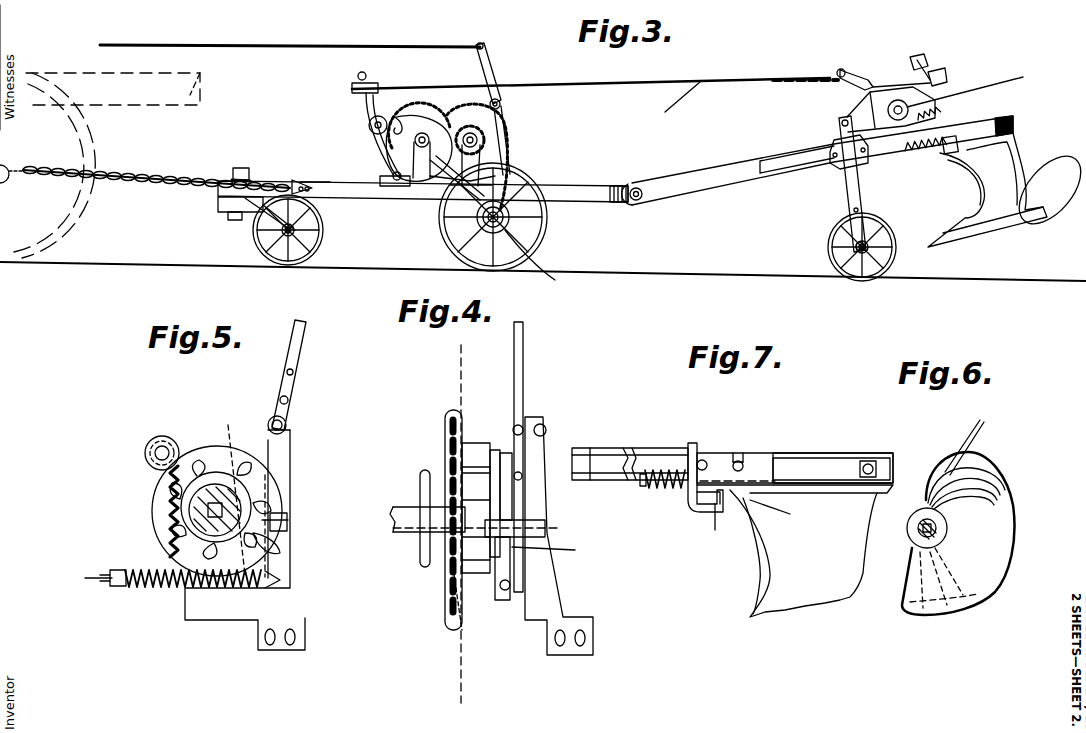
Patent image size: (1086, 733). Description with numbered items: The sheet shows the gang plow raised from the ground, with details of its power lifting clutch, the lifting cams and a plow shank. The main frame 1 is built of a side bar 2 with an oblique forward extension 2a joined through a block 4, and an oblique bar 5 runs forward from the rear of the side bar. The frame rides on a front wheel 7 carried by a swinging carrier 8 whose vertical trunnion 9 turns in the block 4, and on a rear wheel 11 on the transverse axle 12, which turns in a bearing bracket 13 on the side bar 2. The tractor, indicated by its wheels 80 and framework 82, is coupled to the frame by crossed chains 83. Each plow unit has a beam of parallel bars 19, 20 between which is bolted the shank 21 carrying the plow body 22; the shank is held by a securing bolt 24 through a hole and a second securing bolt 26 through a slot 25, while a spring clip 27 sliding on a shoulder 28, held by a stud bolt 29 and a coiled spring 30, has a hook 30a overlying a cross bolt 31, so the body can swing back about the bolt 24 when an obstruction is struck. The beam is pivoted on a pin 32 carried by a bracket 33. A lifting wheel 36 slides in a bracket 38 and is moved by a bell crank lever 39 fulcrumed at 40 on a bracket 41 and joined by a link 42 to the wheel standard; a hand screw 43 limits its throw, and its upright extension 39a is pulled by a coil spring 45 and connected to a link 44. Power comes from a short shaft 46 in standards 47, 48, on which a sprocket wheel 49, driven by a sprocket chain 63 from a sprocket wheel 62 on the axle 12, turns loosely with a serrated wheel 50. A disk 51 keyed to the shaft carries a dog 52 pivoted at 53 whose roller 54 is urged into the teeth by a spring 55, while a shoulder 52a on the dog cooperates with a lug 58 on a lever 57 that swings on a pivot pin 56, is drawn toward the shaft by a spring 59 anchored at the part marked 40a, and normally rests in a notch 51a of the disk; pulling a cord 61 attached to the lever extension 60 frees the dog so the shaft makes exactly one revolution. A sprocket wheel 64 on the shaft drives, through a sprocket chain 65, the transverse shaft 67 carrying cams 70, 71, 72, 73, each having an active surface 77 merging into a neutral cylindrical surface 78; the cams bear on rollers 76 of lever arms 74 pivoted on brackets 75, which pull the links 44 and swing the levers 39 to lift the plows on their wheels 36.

In FIG. 3, the main frame 1 is at (330, 162).
In FIG. 3, the side bar 2 is at (583, 189).
In FIG. 3, the oblique forward extension 2a is at (276, 182).
In FIG. 3, the block 4 is at (234, 167).
In FIG. 4, the obliquely disposed bar 5 is at (457, 530).
In FIG. 3, the front wheel 7 is at (330, 240).
In FIG. 3, the swinging yoke or carrier 8 is at (252, 218).
In FIG. 3, the vertical trunnion 9 is at (248, 178).
In FIG. 3, the wheel 11 is at (540, 250).
In FIG. 3, the transverse axle 12 is at (477, 223).
In FIG. 3, the bearing bracket 13 is at (540, 172).
In FIG. 3, the beam bar 19 is at (705, 168).
In FIG. 7, the beam bar 19 is at (840, 453).
In FIG. 7, the beam bar 20 is at (655, 446).
In FIG. 3, the shank or standard 21 is at (1010, 165).
In FIG. 7, the shank or standard 21 is at (810, 597).
In FIG. 3, the plow body 22 is at (1046, 190).
In FIG. 3, the securing bolt 24 is at (1004, 126).
In FIG. 7, the securing bolt 24 is at (875, 455).
In FIG. 7, the slot 25 is at (745, 462).
In FIG. 7, the securing bolt 26 is at (745, 466).
In FIG. 7, the spring clip 27 is at (715, 530).
In FIG. 7, the shoulder 28 is at (790, 514).
In FIG. 3, the stud bolt 29 is at (915, 156).
In FIG. 7, the stud bolt 29 is at (640, 480).
In FIG. 3, the coiled spring 30 is at (945, 156).
In FIG. 7, the coiled spring 30 is at (690, 488).
In FIG. 7, the hook 30a is at (705, 460).
In FIG. 7, the cross bolt 31 is at (741, 460).
In FIG. 3, the rod or pin 32 is at (636, 200).
In FIG. 3, the bracket 33 is at (635, 188).
In FIG. 3, the supporting and lifting wheel 36 is at (828, 240).
In FIG. 3, the bracket 38 is at (840, 165).
In FIG. 3, the bell crank or lever 39 is at (850, 105).
In FIG. 3, the upright extension 39a is at (878, 58).
In FIG. 3, the fulcrum 40 is at (910, 104).
In FIG. 5, the spring rod 40a is at (115, 585).
In FIG. 3, the bracket 41 is at (945, 112).
In FIG. 3, the link 42 is at (840, 128).
In FIG. 3, the hand screw 43 is at (935, 60).
In FIG. 3, the link 44 is at (674, 97).
In FIG. 3, the coil spring 45 is at (965, 86).
In FIG. 3, the short shaft 46 is at (523, 88).
In FIG. 5, the short shaft 46 is at (200, 522).
In FIG. 4, the short shaft 46 is at (395, 520).
In FIG. 3, the bearing bracket or standard 47 is at (495, 160).
In FIG. 5, the bearing bracket or standard 48 is at (285, 452).
In FIG. 4, the bearing bracket or standard 48 is at (538, 468).
In FIG. 3, the sprocket wheel 49 is at (490, 125).
In FIG. 4, the sprocket wheel 49 is at (448, 595).
In FIG. 5, the serrated wheel 50 is at (287, 522).
In FIG. 4, the serrated wheel 50 is at (463, 602).
In FIG. 5, the disk 51 is at (290, 560).
In FIG. 4, the disk 51 is at (503, 595).
In FIG. 5, the notch 51a is at (275, 520).
In FIG. 5, the pawl or dog 52 is at (185, 460).
In FIG. 4, the pawl or dog 52 is at (495, 450).
In FIG. 5, the shoulder 52a is at (280, 548).
In FIG. 5, the pivot 53 is at (232, 455).
In FIG. 5, the roller 54 is at (168, 438).
In FIG. 4, the roller 54 is at (476, 443).
In FIG. 5, the spring 55 is at (170, 482).
In FIG. 5, the pivot pin 56 is at (292, 418).
In FIG. 4, the pivot pin 56 is at (535, 422).
In FIG. 5, the lever 57 is at (284, 473).
In FIG. 4, the lever 57 is at (555, 551).
In FIG. 4, the lug 58 is at (545, 528).
In FIG. 5, the spring 59 is at (150, 592).
In FIG. 3, the upward extension 60 is at (490, 62).
In FIG. 5, the upward extension 60 is at (303, 336).
In FIG. 4, the upward extension 60 is at (523, 350).
In FIG. 3, the cord 61 is at (376, 34).
In FIG. 3, the sprocket wheel 62 is at (532, 262).
In FIG. 3, the sprocket chain 63 is at (505, 138).
In FIG. 4, the sprocket wheel 64 is at (420, 488).
In FIG. 3, the sprocket chain 65 is at (440, 100).
In FIG. 3, the transverse shaft 67 is at (398, 128).
In FIG. 6, the transverse shaft 67 is at (914, 534).
In FIG. 6, the cam 70 is at (940, 457).
In FIG. 6, the cam 71 is at (924, 497).
In FIG. 6, the cam 72 is at (970, 468).
In FIG. 6, the cam 73 is at (978, 492).
In FIG. 3, the lever arm 74 is at (372, 82).
In FIG. 3, the bracket 75 is at (392, 190).
In FIG. 3, the roller 76 is at (369, 128).
In FIG. 3, the active surface 77 is at (440, 205).
In FIG. 6, the active surface 77 is at (970, 436).
In FIG. 3, the neutral cylindrical surface 78 is at (383, 150).
In FIG. 6, the neutral cylindrical surface 78 is at (990, 590).
In FIG. 3, the tractor wheel 80 is at (80, 232).
In FIG. 3, the body or framework 82 is at (208, 84).
In FIG. 3, the crossed chains 83 is at (158, 176).